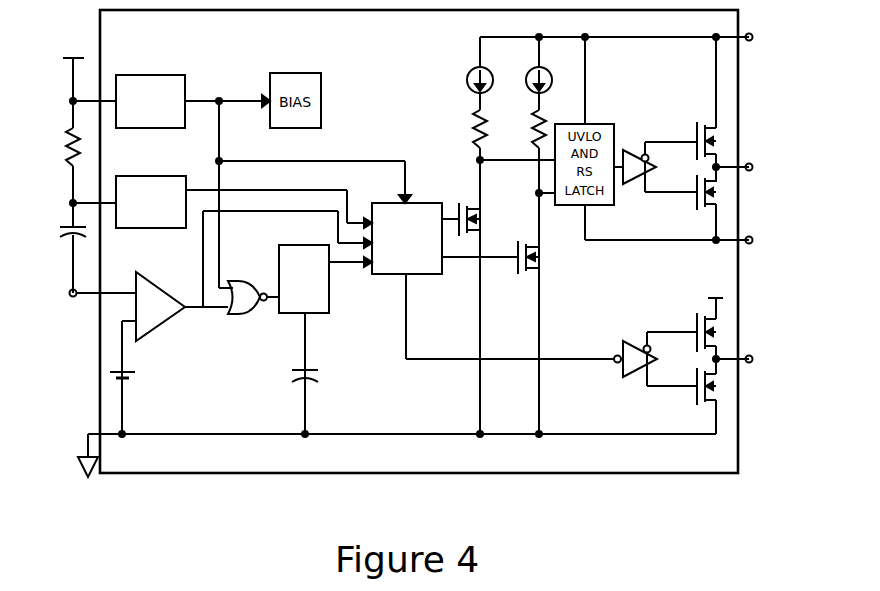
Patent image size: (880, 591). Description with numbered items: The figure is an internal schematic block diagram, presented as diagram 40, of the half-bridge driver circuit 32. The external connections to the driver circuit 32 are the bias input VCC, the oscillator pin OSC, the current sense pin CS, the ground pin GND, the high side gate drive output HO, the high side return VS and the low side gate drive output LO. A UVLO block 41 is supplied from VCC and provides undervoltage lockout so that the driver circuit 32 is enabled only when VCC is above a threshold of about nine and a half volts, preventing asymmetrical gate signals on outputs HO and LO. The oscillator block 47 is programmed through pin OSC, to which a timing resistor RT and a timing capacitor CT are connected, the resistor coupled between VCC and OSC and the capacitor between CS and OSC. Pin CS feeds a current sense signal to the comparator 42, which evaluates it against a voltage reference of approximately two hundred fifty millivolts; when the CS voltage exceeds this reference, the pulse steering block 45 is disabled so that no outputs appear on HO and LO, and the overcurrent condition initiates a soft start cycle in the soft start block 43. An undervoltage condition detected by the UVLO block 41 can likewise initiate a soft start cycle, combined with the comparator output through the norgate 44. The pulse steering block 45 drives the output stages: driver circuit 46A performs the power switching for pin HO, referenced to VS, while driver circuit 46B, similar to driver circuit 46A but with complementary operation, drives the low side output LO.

The half-bridge driver circuit 32 is at (420, 474).
The diagram 40 is at (305, 518).
The UVLO block 41 is at (155, 75).
The comparator 42 is at (158, 284).
The soft start block 43 is at (290, 313).
The norgate 44 is at (249, 284).
The pulse steering block 45 is at (378, 274).
The driver circuit 46A is at (676, 130).
The driver circuit 46B is at (666, 322).
The oscillator block 47 is at (155, 176).